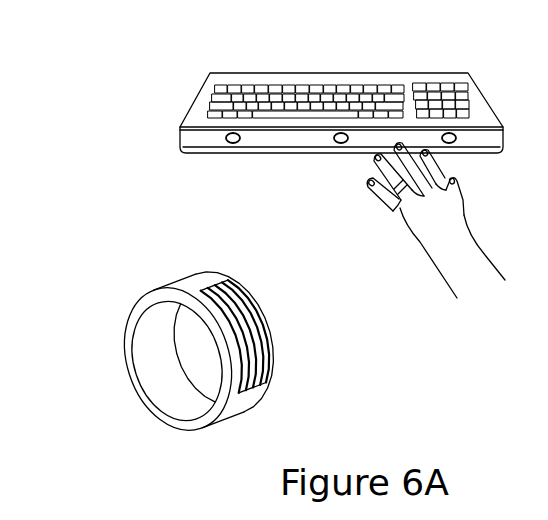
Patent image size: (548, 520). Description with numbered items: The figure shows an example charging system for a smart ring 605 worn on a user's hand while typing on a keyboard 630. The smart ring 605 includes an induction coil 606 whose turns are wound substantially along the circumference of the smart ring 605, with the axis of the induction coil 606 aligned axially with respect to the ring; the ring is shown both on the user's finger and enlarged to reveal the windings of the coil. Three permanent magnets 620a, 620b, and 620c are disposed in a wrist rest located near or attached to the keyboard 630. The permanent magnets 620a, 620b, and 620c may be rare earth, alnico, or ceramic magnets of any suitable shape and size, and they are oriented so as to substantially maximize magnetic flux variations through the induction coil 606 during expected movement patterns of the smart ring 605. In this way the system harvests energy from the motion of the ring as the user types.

The keyboard 630 is at (278, 72).
The permanent magnet 620a is at (233, 144).
The permanent magnet 620b is at (341, 144).
The permanent magnet 620c is at (453, 145).
The smart ring 605 is at (402, 206).
The induction coil 606 is at (264, 341).